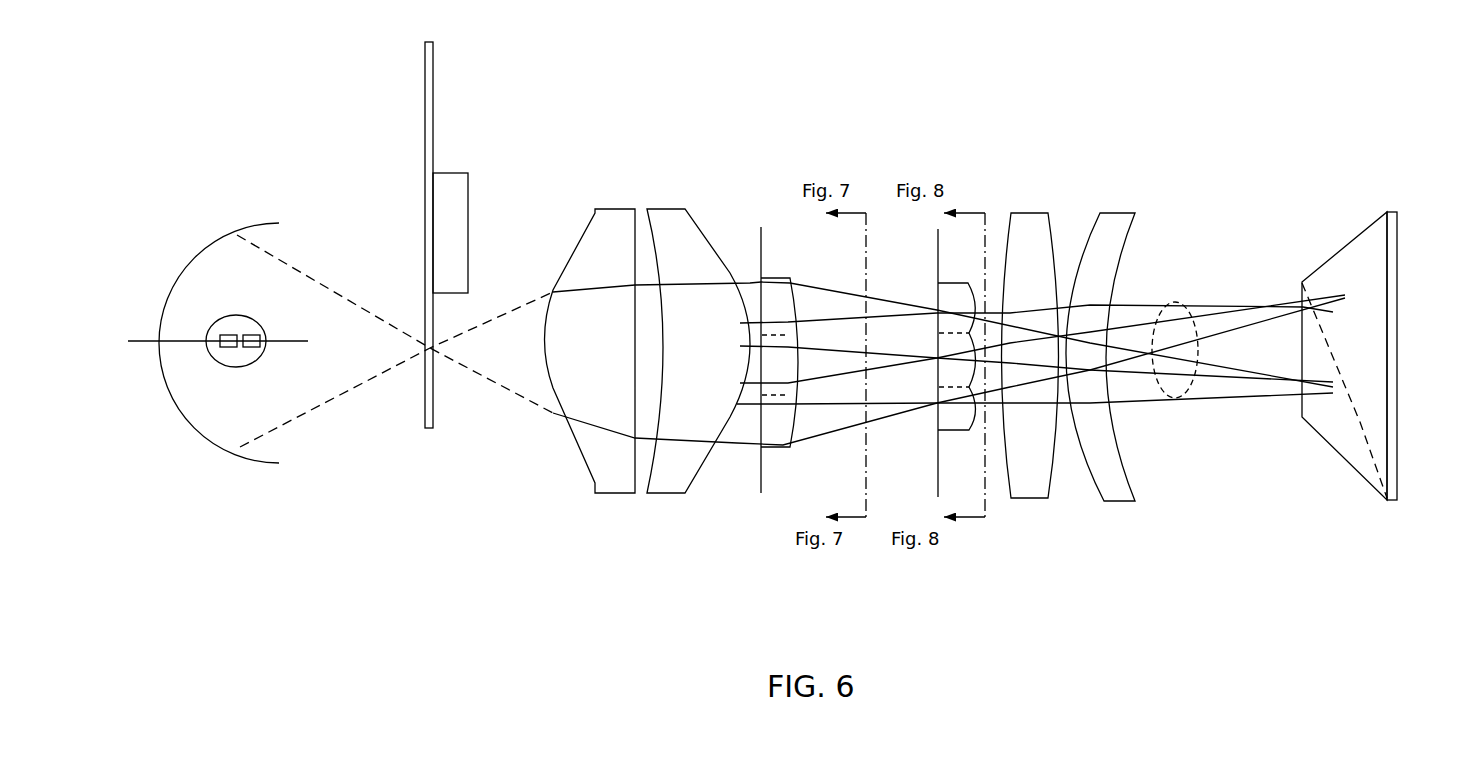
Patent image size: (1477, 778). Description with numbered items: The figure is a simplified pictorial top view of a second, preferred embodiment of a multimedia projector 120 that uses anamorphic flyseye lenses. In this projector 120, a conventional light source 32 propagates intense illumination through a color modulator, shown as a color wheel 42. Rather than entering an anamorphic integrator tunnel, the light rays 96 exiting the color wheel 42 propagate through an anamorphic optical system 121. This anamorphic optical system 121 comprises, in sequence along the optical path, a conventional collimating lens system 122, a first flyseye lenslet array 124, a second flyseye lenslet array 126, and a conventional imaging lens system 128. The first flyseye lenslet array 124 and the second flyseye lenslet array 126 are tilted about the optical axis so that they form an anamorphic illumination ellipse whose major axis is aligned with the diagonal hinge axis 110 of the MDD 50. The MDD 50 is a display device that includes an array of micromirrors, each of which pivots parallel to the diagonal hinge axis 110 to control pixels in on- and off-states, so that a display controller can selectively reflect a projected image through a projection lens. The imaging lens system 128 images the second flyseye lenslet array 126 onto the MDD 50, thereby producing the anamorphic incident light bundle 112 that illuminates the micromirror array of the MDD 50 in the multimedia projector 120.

The light source 32 is at (237, 220).
The color wheel 42 is at (446, 150).
The light rays 96 is at (333, 403).
The anamorphic optical system 121 is at (1132, 112).
The collimating lens system 122 is at (681, 227).
The first flyseye lenslet array 124 is at (777, 233).
The second flyseye lenslet array 126 is at (958, 262).
The imaging lens system 128 is at (1115, 226).
The anamorphic incident light bundle 112 is at (1180, 400).
The MDD 50 is at (1350, 260).
The diagonal hinge axis 110 is at (1360, 422).
The multimedia projector 120 is at (1264, 529).